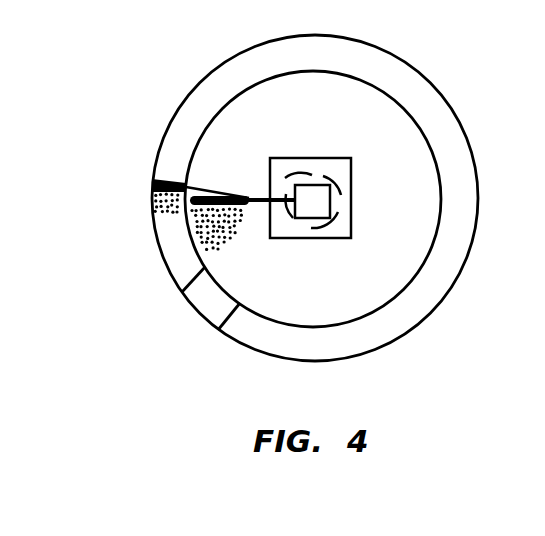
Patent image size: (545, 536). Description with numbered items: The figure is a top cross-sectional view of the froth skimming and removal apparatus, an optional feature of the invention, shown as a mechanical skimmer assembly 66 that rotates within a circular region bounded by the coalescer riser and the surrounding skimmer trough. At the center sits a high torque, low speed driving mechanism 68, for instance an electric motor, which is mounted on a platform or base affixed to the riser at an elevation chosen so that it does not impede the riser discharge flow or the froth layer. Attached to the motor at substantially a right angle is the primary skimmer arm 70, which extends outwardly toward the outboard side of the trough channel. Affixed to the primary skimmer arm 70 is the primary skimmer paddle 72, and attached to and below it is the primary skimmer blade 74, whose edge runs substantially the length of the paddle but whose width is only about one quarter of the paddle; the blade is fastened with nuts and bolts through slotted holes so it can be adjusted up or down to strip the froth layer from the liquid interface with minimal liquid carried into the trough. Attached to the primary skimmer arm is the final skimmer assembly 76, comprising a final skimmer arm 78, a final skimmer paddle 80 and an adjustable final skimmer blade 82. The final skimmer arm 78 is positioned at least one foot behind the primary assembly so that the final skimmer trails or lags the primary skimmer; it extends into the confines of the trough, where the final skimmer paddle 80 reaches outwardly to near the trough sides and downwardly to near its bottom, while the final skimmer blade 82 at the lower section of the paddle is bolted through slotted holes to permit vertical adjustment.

The mechanical skimmer assembly 66 is at (236, 168).
The driving mechanism 68 is at (318, 186).
The primary skimmer arm 70 is at (262, 198).
The primary skimmer paddle 72 is at (250, 196).
The primary skimmer blade 74 is at (242, 212).
The final skimmer assembly 76 is at (160, 187).
The final skimmer arm 78 is at (190, 190).
The final skimmer paddle 80 is at (167, 181).
The final skimmer blade 82 is at (156, 206).